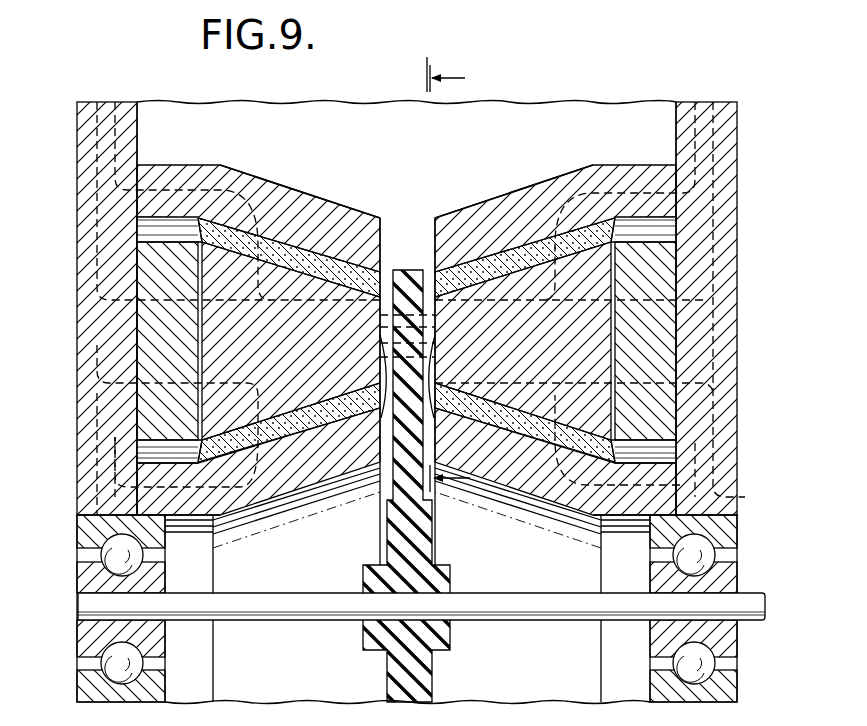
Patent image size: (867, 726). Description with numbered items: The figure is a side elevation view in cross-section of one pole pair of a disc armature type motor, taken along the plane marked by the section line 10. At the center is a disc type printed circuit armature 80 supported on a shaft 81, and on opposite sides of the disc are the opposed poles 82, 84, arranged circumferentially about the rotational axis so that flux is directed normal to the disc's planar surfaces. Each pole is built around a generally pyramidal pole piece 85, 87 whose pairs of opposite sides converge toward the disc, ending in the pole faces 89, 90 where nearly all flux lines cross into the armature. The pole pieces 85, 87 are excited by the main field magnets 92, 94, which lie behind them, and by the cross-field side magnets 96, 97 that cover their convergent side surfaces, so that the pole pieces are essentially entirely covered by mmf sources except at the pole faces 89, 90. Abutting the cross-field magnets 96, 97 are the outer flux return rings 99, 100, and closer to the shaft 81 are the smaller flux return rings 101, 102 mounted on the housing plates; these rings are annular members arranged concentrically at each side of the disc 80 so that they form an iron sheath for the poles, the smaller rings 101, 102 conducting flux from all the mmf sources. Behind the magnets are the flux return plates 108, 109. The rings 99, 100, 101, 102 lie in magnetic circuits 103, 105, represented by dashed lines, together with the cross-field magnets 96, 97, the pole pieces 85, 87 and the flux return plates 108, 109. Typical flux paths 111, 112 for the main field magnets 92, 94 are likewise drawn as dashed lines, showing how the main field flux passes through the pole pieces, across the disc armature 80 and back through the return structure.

The section line 10 is at (450, 278).
The disc type printed circuit armature 80 is at (408, 269).
The shaft 81 is at (292, 618).
The pole 82 is at (315, 191).
The pole 84 is at (501, 191).
The pole piece 85 is at (246, 349).
The pole piece 87 is at (521, 352).
The pole face 89 is at (325, 472).
The pole face 90 is at (437, 412).
The main field magnet 92 is at (178, 349).
The main field magnet 94 is at (657, 349).
The cross-field side magnet 96 is at (342, 256).
The cross-field side magnet 97 is at (476, 256).
The outer flux return ring 99 is at (279, 198).
The outer flux return ring 100 is at (563, 187).
The smaller flux return ring 101 is at (340, 458).
The smaller flux return ring 102 is at (515, 468).
The magnetic circuit 103 is at (690, 135).
The magnetic circuit 105 is at (613, 304).
The flux return plate 108 is at (80, 329).
The flux return plate 109 is at (735, 326).
The flux path 111 is at (95, 253).
The flux path 112 is at (95, 437).